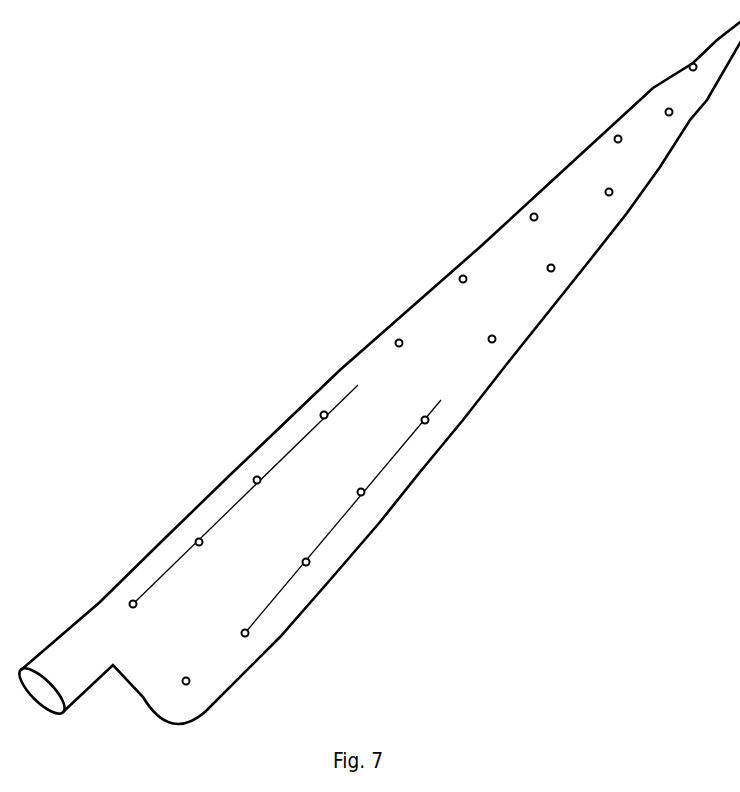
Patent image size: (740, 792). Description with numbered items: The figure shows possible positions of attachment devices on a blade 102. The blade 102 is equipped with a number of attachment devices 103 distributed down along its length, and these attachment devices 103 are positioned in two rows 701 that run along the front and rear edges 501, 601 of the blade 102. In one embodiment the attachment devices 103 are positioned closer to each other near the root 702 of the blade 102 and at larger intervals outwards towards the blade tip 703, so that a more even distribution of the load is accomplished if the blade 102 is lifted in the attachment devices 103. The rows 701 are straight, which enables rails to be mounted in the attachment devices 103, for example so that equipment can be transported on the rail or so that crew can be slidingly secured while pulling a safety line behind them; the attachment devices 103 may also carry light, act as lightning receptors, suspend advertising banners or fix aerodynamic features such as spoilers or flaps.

The blade 102 is at (380, 371).
The attachment devices 103 is at (555, 267).
The front edge 501 is at (413, 467).
The rear edge 601 is at (212, 513).
The rows 701 is at (374, 571).
The root 702 is at (155, 665).
The blade tip 703 is at (692, 80).